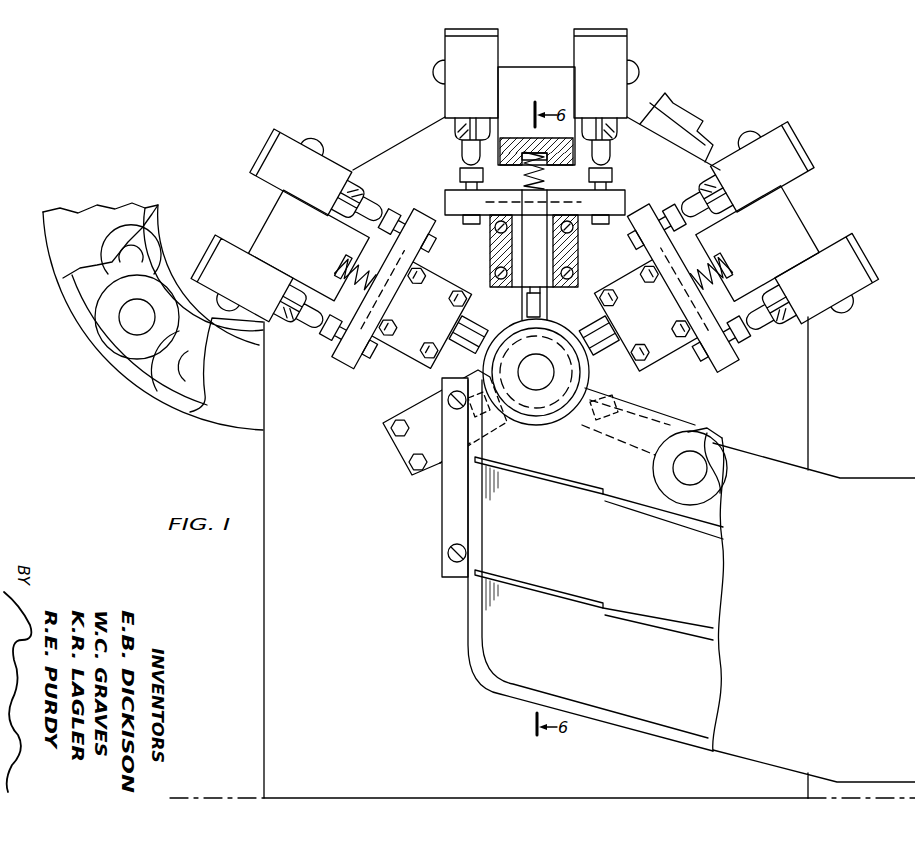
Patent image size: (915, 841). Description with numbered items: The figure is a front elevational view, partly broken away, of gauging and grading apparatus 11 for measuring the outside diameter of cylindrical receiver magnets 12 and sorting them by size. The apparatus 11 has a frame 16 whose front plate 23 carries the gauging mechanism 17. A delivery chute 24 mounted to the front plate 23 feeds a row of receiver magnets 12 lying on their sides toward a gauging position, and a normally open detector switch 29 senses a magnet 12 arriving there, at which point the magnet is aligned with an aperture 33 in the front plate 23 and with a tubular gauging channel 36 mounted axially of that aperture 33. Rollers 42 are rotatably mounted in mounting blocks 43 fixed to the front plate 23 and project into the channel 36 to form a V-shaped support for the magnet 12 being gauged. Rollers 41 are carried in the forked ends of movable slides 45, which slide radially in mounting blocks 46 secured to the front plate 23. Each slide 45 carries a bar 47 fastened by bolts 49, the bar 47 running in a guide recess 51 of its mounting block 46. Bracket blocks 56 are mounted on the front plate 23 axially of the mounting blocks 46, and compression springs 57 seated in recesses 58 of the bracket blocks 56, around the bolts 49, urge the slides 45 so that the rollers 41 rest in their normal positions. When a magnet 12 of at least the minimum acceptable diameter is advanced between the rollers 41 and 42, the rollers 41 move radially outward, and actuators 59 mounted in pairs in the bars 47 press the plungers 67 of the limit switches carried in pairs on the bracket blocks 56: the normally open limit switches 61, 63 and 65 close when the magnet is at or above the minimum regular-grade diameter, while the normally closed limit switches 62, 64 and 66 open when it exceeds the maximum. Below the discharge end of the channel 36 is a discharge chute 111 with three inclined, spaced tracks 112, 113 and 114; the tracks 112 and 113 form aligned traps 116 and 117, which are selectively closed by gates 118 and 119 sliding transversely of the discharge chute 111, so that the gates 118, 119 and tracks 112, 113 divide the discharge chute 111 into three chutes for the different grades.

The gauging and grading apparatus 11 is at (829, 72).
The receiver magnet 12 is at (535, 410).
The frame 16 is at (808, 412).
The gauging mechanism 17 is at (652, 382).
The front plate 23 is at (263, 463).
The delivery chute 24 is at (163, 231).
The detector switch 29 is at (692, 118).
The aperture 33 is at (557, 330).
The tubular gauging channel 36 is at (525, 422).
The rollers 41 is at (508, 308).
The rollers 42 is at (490, 414).
The mounting blocks 43 is at (405, 449).
The movable slides 45 is at (572, 201).
The mounting blocks 46 is at (496, 267).
The bars 47 is at (452, 199).
The bolts 49 is at (522, 178).
The guide recesses 51 is at (582, 221).
The bracket blocks 56 is at (545, 68).
The compression springs 57 is at (547, 174).
The recesses 58 is at (533, 140).
The actuators 59 is at (461, 174).
The normally open limit switch 61 is at (251, 247).
The normally closed limit switch 62 is at (338, 161).
The normally open limit switch 63 is at (447, 50).
The normally closed limit switch 64 is at (620, 53).
The normally open limit switch 65 is at (778, 133).
The normally closed limit switch 66 is at (858, 281).
The plungers 67 is at (466, 150).
The discharge chute 111 is at (468, 630).
The track 112 is at (645, 512).
The track 113 is at (629, 615).
The track 114 is at (593, 707).
The trap 116 is at (587, 498).
The trap 117 is at (587, 607).
The gate 118 is at (508, 474).
The gate 119 is at (527, 588).